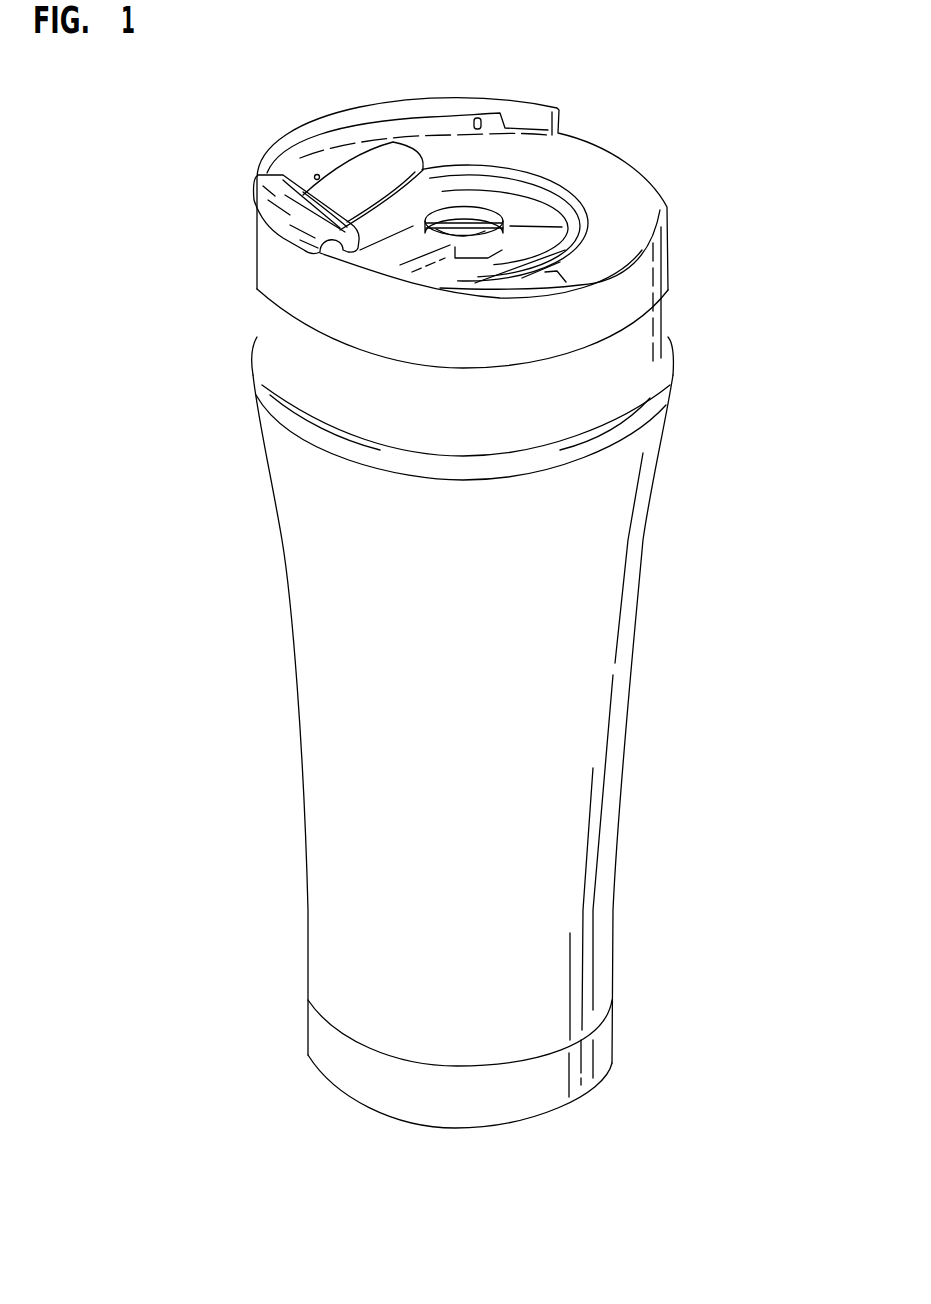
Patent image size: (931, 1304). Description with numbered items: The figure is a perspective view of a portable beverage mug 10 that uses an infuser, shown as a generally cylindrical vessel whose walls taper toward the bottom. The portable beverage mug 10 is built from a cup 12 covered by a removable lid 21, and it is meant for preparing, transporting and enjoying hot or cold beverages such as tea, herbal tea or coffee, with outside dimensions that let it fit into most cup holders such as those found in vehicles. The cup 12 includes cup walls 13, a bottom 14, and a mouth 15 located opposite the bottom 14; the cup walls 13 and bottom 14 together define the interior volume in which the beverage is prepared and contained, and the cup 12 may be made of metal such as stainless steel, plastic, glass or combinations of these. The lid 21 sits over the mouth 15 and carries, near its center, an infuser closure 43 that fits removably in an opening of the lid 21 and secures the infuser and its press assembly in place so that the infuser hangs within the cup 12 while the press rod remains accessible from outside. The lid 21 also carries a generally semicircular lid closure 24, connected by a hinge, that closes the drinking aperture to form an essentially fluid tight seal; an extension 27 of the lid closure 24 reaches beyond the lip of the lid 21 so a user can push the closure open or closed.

The portable beverage mug 10 is at (143, 190).
The cup 12 is at (282, 563).
The cup walls 13 is at (337, 672).
The bottom 14 is at (375, 1115).
The mouth 15 is at (664, 290).
The lid 21 is at (668, 246).
The lid closure 24 is at (370, 165).
The extension 27 is at (263, 197).
The infuser closure 43 is at (523, 215).